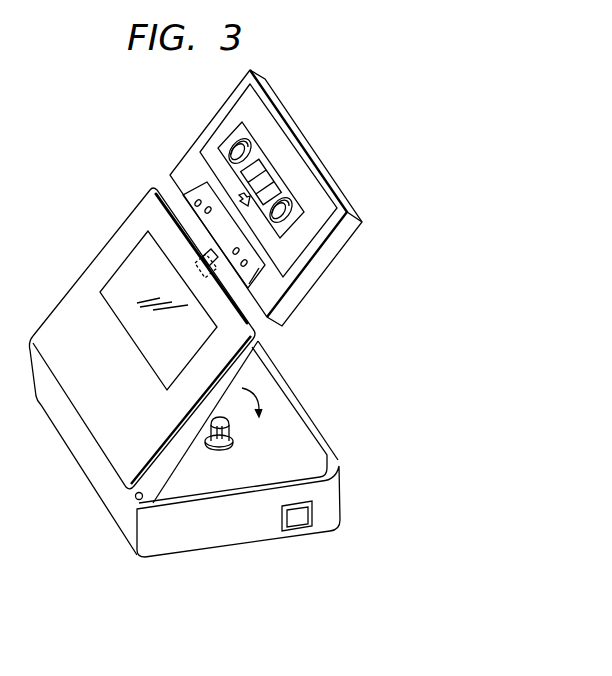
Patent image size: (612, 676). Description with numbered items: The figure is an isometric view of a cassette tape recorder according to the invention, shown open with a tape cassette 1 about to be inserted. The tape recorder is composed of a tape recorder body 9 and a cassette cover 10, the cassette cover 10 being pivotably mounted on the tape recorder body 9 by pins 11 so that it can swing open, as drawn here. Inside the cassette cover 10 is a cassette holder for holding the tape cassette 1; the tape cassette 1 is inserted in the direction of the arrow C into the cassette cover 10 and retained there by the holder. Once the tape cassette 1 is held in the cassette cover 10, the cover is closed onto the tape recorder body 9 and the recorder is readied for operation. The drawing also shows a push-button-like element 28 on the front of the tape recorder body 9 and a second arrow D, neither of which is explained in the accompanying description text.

The tape cassette 1 is at (342, 231).
The tape recorder body 9 is at (183, 542).
The cassette cover 10 is at (131, 492).
The pins 11 is at (136, 507).
The push button 28 is at (292, 523).
The arrow C (cassette insertion direction) C is at (196, 264).
The direction of movement D is at (312, 343).